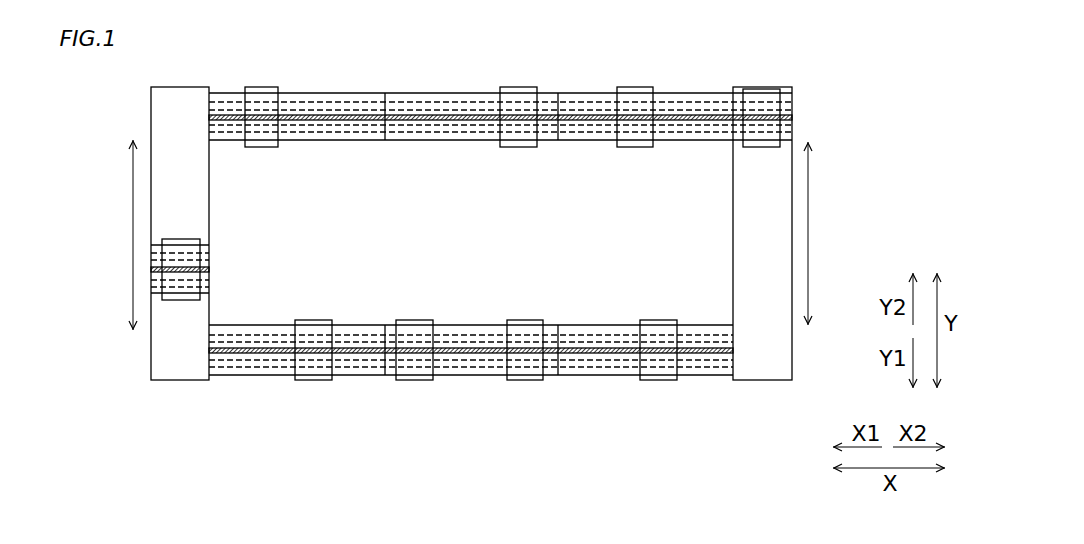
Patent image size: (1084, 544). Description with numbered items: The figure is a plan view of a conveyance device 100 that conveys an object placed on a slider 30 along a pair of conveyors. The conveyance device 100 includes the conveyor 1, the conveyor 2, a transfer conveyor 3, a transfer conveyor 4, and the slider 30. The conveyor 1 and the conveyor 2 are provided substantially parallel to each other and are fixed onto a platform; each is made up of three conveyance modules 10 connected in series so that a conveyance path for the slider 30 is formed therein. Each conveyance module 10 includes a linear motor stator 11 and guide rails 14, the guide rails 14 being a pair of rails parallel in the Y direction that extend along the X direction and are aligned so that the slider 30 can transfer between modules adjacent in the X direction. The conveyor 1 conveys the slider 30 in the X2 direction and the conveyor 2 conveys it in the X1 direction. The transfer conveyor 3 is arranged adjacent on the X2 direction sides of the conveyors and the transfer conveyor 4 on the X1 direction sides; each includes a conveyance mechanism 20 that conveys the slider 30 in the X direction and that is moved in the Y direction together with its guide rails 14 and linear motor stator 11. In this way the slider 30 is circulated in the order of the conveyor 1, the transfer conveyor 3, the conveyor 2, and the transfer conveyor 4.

The conveyance device 100 is at (806, 58).
The conveyor 1 is at (571, 55).
The conveyor 2 is at (603, 294).
The transfer conveyor 3 is at (829, 188).
The transfer conveyor 4 is at (129, 113).
The conveyance module 10 is at (356, 93).
The linear motor stator 11 is at (347, 140).
The guide rail 14 is at (304, 103).
The conveyance mechanism 20 is at (211, 238).
The slider 30 is at (265, 87).